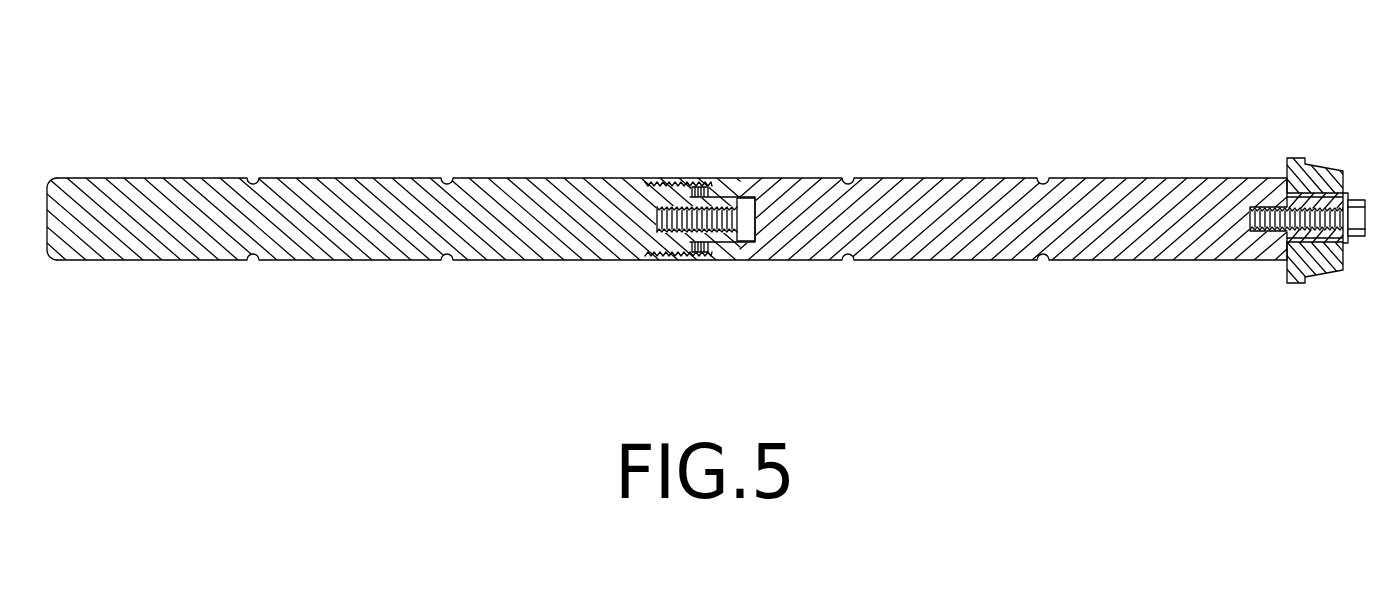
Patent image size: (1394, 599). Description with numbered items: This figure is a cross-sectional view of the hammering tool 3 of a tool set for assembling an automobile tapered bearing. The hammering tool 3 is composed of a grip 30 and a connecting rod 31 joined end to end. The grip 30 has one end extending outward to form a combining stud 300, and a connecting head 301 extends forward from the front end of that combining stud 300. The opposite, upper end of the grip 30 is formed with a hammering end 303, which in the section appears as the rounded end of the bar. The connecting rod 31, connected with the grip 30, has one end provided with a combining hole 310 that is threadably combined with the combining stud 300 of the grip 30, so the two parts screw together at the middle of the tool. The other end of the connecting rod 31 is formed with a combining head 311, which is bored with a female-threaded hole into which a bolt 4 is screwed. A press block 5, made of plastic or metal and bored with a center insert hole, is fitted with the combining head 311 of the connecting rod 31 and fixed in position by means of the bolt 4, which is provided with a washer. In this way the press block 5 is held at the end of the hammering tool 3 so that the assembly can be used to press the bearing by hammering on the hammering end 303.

The hammering tool 3 is at (243, 133).
The grip 30 is at (338, 198).
The connecting rod 31 is at (960, 192).
The combining stud 300 is at (665, 195).
The connecting head 301 is at (657, 214).
The hammering end 303 is at (47, 213).
The combining hole 310 is at (682, 185).
The combining head 311 is at (1302, 203).
The bolt 4 is at (1285, 223).
The press block 5 is at (1298, 165).